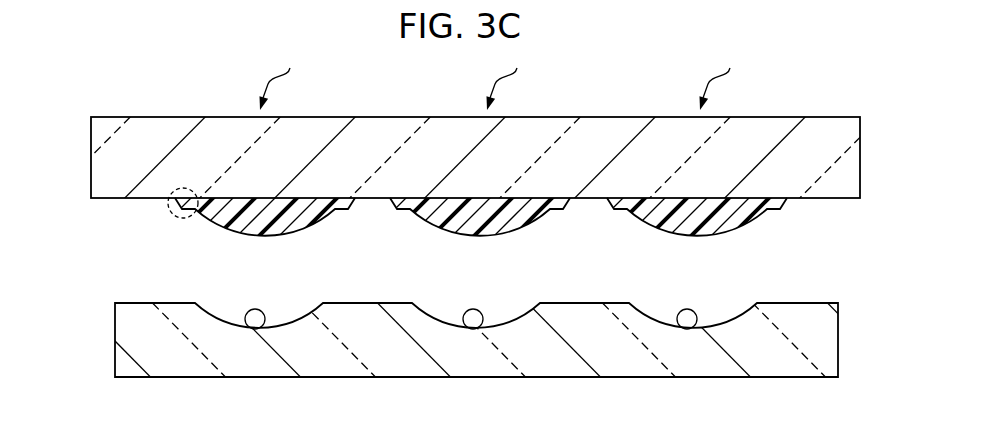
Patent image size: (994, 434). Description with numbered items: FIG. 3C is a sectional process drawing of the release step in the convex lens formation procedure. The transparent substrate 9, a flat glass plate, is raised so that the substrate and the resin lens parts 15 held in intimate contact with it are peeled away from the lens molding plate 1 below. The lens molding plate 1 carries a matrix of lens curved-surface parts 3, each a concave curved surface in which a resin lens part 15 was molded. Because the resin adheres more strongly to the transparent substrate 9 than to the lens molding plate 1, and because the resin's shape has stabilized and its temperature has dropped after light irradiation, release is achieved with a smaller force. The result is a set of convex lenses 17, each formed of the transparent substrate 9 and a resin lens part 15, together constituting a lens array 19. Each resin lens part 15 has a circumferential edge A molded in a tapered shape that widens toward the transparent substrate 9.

The lens array 19 is at (146, 84).
The transparent substrate 9 is at (213, 118).
The convex lens 17 is at (503, 78).
The resin lens part 15 is at (296, 225).
The circumferential edge A is at (180, 219).
The lens molding plate 1 is at (135, 336).
The lens curved-surface part 3 is at (244, 326).